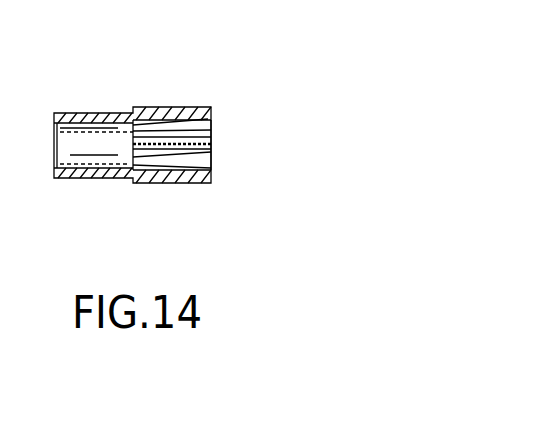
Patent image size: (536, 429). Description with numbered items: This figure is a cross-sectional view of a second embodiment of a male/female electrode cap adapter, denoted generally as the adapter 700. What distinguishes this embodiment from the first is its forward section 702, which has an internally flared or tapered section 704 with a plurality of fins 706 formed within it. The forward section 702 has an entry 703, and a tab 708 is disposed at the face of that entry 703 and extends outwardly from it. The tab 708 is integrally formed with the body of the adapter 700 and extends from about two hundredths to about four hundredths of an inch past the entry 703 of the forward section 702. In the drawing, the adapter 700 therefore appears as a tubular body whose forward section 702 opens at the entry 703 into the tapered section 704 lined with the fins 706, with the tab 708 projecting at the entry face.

The adapter 700 is at (107, 80).
The forward section 702 is at (133, 110).
The entry 703 is at (218, 153).
The internally flared or tapered section 704 is at (167, 170).
The fins 706 is at (213, 127).
The tab 708 is at (212, 111).